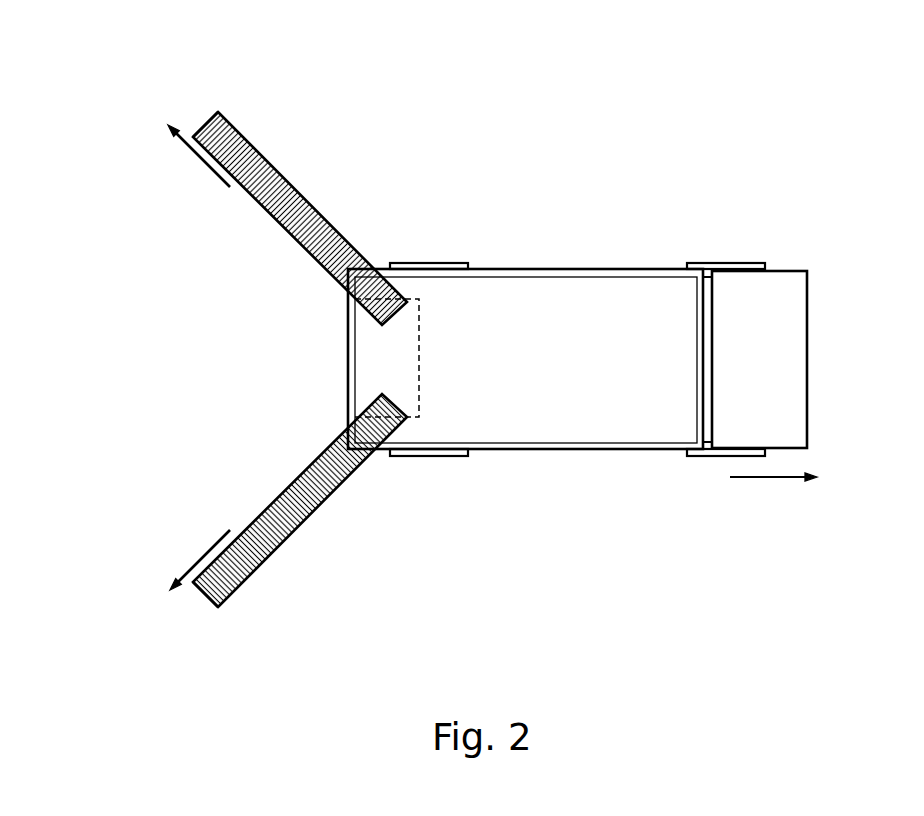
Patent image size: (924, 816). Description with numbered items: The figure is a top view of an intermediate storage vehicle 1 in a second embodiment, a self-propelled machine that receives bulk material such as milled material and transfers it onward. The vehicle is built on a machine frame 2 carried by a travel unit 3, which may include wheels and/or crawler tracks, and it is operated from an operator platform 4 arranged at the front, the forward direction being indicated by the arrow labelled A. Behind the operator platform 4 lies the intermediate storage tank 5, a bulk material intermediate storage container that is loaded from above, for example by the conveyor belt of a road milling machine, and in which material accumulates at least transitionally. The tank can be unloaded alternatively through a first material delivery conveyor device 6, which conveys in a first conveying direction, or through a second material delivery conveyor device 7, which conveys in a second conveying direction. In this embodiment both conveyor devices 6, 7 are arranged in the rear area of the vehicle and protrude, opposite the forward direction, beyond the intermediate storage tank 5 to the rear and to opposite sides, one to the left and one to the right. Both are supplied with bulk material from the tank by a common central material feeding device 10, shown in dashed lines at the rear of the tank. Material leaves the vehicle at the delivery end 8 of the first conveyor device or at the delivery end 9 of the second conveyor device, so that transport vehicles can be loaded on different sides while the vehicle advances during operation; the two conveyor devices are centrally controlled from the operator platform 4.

The intermediate storage vehicle 1 is at (489, 371).
The machine frame 2 is at (652, 270).
The travel unit 3 is at (432, 268).
The operator platform 4 is at (785, 300).
The intermediate storage tank 5 is at (582, 385).
The first material delivery conveyor device 6 is at (280, 228).
The second material delivery conveyor device 7 is at (293, 478).
The delivery end of the first material delivery conveyor device 8 is at (208, 122).
The delivery end of the second material delivery conveyor device 9 is at (203, 592).
The central material feeding device 10 is at (393, 384).